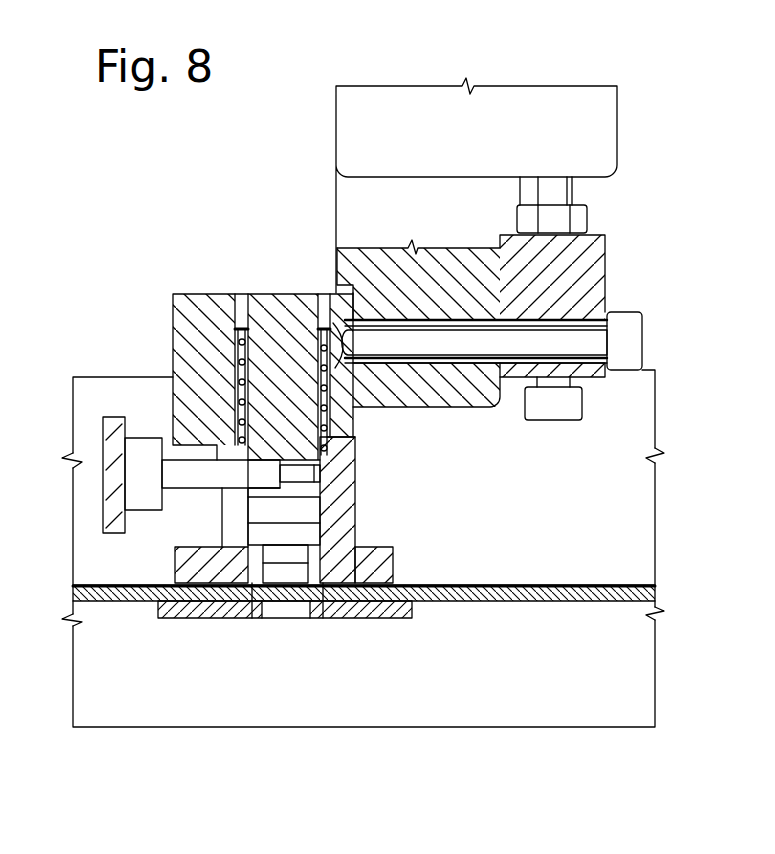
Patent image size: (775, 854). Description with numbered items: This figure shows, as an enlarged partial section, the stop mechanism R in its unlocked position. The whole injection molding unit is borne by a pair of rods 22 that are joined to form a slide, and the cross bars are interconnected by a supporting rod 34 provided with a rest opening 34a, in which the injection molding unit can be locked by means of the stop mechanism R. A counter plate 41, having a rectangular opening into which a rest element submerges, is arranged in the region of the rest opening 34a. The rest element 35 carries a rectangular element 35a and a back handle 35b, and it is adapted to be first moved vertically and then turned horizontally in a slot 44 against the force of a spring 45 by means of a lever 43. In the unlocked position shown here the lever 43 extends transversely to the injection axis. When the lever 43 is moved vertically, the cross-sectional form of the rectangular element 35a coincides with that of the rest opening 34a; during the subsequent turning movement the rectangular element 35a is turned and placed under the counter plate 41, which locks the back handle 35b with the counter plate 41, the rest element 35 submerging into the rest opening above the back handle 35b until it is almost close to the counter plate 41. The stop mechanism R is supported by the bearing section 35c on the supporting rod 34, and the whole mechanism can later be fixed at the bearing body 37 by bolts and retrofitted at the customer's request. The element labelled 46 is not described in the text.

The pair of rods 22 is at (88, 390).
The supporting rod 34 is at (563, 585).
The rest opening 34a is at (295, 610).
The rest element 35 is at (298, 437).
The rectangular element 35a is at (280, 573).
The back handle 35b is at (300, 548).
The bearing section 35c is at (395, 555).
The bearing body 37 is at (432, 202).
The counter plate 41 is at (398, 617).
The lever 43 is at (183, 477).
The slot 44 is at (232, 523).
The spring 45 is at (248, 333).
The adjusting screw 46 is at (478, 342).
The stop mechanism R is at (205, 292).